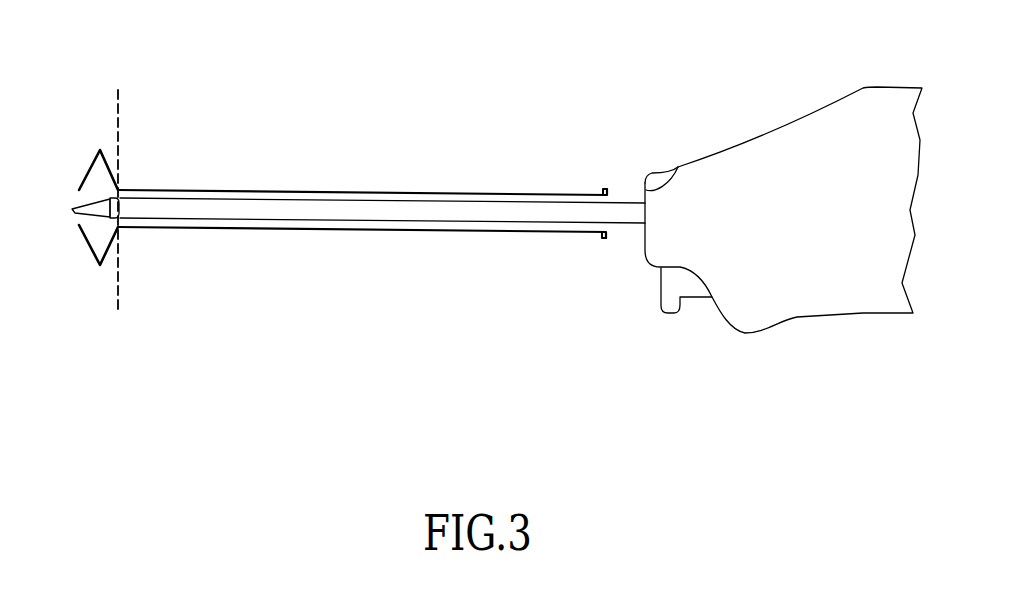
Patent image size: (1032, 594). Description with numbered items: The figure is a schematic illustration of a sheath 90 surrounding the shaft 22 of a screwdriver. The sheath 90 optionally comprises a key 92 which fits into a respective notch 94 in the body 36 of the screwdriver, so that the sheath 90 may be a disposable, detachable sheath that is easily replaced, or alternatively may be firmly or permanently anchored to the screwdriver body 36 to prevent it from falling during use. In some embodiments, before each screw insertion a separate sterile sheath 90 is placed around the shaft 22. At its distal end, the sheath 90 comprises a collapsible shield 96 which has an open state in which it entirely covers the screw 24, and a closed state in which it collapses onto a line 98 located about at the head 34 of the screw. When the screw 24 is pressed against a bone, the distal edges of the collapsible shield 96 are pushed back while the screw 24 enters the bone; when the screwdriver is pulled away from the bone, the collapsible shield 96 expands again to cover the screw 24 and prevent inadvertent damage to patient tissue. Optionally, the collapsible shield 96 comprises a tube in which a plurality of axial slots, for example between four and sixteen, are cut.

The shaft 22 is at (358, 202).
The screw 24 is at (73, 211).
The head of the screw 34 is at (114, 233).
The body 36 is at (747, 143).
The sheath 90 is at (275, 188).
The key 92 is at (608, 190).
The notch 94 is at (677, 167).
The collapsible shield 96 is at (87, 168).
The line 98 is at (120, 120).